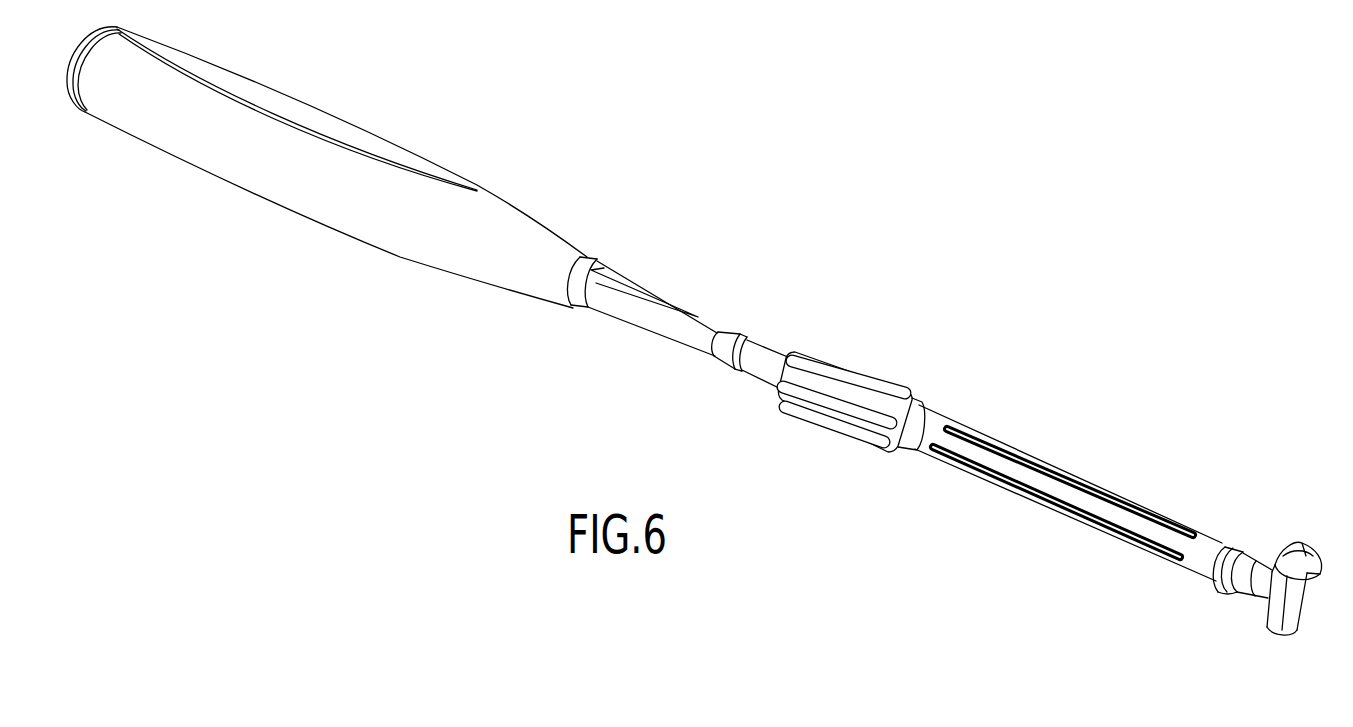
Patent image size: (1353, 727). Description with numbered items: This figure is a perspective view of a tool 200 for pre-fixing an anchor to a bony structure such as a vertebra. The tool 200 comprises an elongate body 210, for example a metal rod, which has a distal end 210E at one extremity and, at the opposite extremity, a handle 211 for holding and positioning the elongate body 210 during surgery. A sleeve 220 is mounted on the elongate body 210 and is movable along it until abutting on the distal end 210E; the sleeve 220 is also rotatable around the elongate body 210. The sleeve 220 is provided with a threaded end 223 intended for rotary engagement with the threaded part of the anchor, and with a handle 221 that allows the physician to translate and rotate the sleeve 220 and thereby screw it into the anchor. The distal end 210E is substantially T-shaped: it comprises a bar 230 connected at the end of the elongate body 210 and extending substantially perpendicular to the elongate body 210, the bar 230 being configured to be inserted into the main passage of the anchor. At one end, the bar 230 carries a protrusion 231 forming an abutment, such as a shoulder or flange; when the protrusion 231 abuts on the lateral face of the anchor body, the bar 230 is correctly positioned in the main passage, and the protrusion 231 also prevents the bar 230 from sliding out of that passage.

The tool 200 is at (364, 351).
The handle 211 is at (494, 220).
The elongate body 210 is at (774, 357).
The handle 221 is at (858, 371).
The sleeve 220 is at (923, 425).
The threaded end 223 is at (1242, 545).
The distal end 210E is at (1279, 517).
The bar 230 is at (1275, 617).
The protrusion 231 is at (1314, 557).